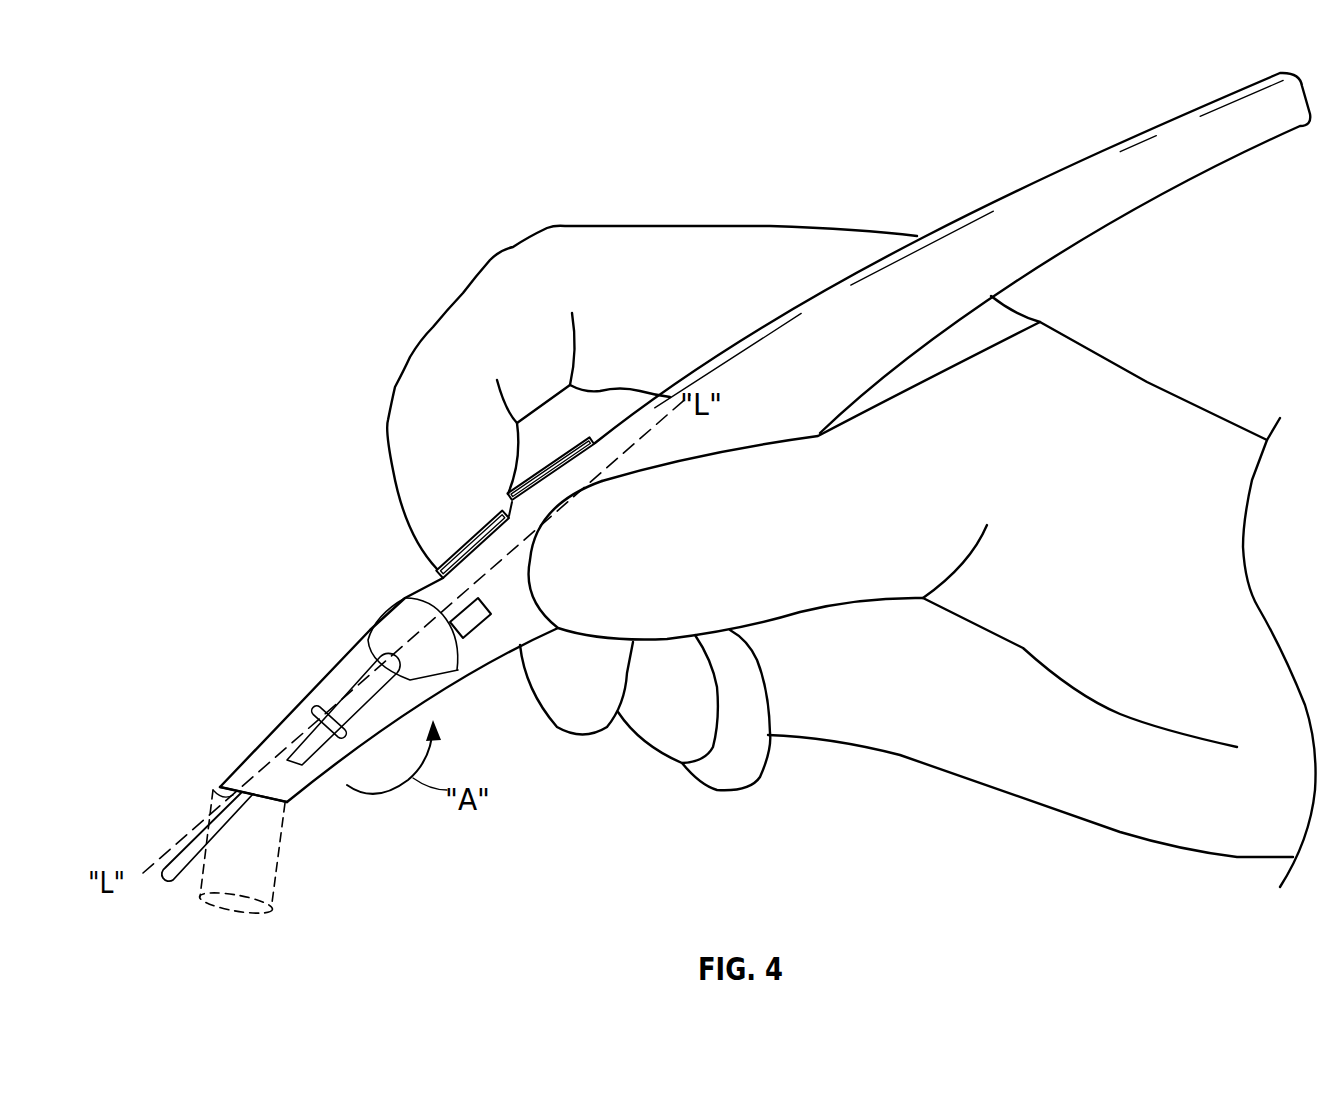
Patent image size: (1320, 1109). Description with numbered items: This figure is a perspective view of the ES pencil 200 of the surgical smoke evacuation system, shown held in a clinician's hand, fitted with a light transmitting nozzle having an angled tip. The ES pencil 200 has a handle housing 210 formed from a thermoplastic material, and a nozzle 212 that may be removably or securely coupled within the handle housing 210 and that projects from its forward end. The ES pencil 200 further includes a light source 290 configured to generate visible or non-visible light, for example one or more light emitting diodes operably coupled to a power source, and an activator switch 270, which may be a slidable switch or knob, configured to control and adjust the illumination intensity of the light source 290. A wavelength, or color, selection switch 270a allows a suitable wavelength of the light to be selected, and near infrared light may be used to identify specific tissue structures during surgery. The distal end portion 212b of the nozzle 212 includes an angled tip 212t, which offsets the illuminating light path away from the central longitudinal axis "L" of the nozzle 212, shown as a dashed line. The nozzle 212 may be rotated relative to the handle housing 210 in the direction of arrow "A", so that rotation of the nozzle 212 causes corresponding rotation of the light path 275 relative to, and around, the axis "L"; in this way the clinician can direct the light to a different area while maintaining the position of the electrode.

The ES pencil 200 is at (1090, 150).
The handle housing 210 is at (995, 225).
The nozzle 212 is at (327, 667).
The angled tip 212t is at (217, 795).
The distal end portion 212b is at (263, 812).
The activator switch 270 is at (458, 545).
The wavelength selection switch 270a is at (548, 470).
The light source 290 is at (452, 612).
The light path 275 is at (199, 869).